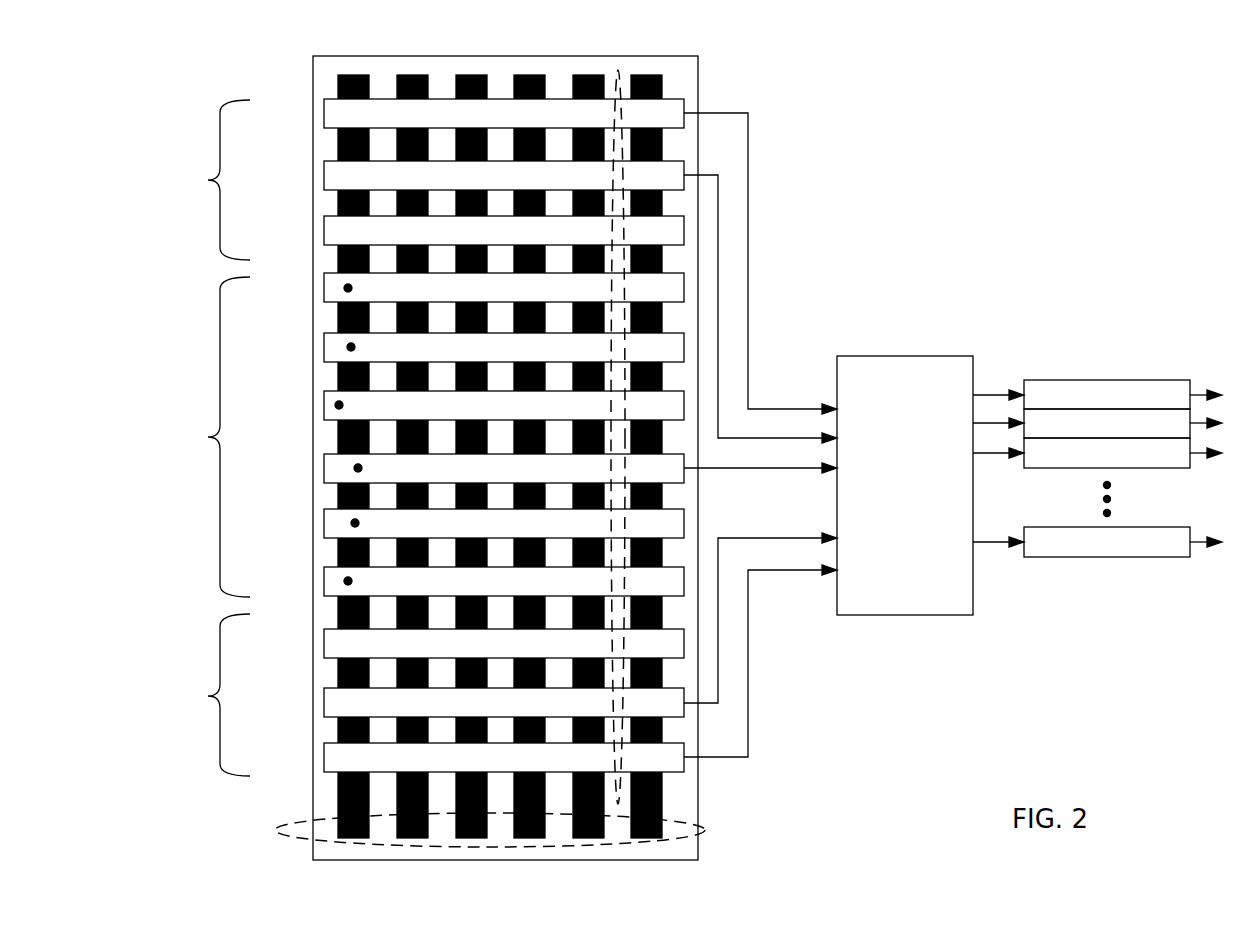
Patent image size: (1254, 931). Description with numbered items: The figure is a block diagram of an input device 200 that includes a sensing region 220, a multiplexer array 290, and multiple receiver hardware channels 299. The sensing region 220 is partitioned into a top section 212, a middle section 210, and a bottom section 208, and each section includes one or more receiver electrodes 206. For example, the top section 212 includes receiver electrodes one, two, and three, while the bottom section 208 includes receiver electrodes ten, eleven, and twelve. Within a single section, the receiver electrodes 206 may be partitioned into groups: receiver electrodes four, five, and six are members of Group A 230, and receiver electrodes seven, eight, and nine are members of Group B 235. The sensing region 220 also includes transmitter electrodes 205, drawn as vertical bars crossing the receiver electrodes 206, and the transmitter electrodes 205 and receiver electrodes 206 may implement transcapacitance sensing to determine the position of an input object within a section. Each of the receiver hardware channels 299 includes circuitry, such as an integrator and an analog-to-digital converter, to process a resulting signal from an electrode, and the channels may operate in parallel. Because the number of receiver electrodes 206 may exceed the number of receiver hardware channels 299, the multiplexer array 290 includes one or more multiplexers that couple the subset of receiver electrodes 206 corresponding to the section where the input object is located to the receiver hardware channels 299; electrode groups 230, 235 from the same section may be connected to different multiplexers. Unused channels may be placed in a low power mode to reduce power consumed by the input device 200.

The input device 200 is at (686, 446).
The transmitter electrodes 205 is at (710, 833).
The receiver electrodes 206 is at (528, 437).
The bottom section 208 is at (417, 695).
The middle section 210 is at (417, 435).
The top section 212 is at (417, 179).
The sensing region 220 is at (706, 86).
The Group A 230 is at (348, 288).
The Group B 235 is at (348, 581).
The multiplexer array 290 is at (905, 485).
The receiver hardware channels 299 is at (1097, 385).